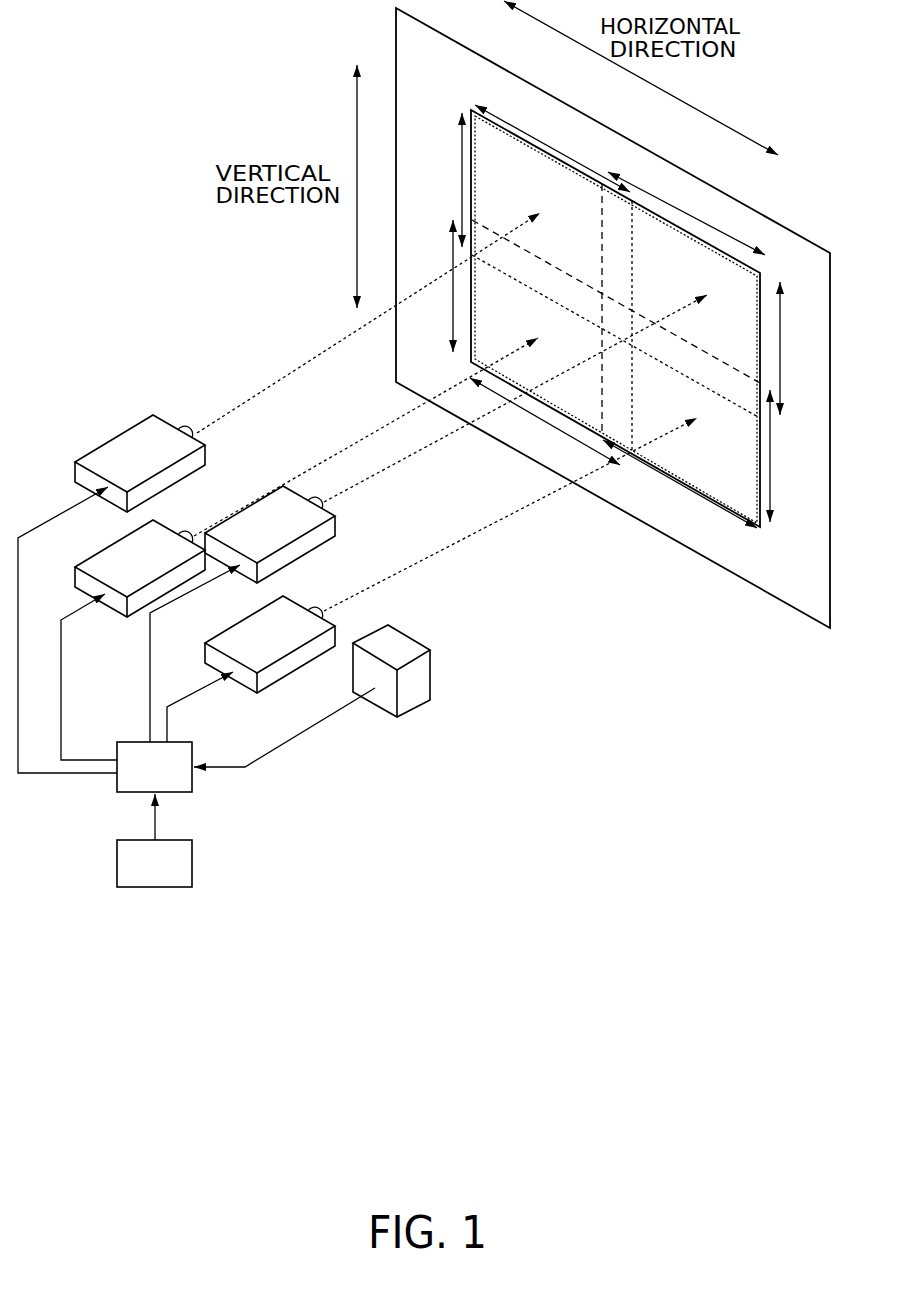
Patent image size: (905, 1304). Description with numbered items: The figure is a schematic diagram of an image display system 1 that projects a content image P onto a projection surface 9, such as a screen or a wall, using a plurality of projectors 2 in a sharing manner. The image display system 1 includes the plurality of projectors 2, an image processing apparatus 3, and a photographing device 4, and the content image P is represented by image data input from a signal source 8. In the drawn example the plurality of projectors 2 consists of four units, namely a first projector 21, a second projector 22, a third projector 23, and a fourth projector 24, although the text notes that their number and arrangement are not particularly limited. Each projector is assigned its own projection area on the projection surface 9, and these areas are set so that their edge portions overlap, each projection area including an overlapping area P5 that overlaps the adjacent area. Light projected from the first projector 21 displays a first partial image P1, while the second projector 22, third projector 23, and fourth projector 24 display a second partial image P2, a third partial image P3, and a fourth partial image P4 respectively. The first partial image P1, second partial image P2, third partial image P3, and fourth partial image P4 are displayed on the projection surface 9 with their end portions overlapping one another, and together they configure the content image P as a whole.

The image display system 1 is at (382, 814).
The plurality of projectors 2 is at (172, 388).
The first projector 21 is at (113, 447).
The second projector 22 is at (330, 531).
The third projector 23 is at (118, 612).
The fourth projector 24 is at (240, 683).
The image processing apparatus 3 is at (192, 780).
The photographing device 4 is at (432, 678).
The signal source 8 is at (192, 875).
The projection surface 9 is at (776, 567).
The content image P is at (754, 281).
The first partial image P1 is at (527, 176).
The second partial image P2 is at (712, 293).
The third partial image P3 is at (521, 342).
The fourth partial image P4 is at (705, 459).
The overlapping area P5 is at (612, 217).